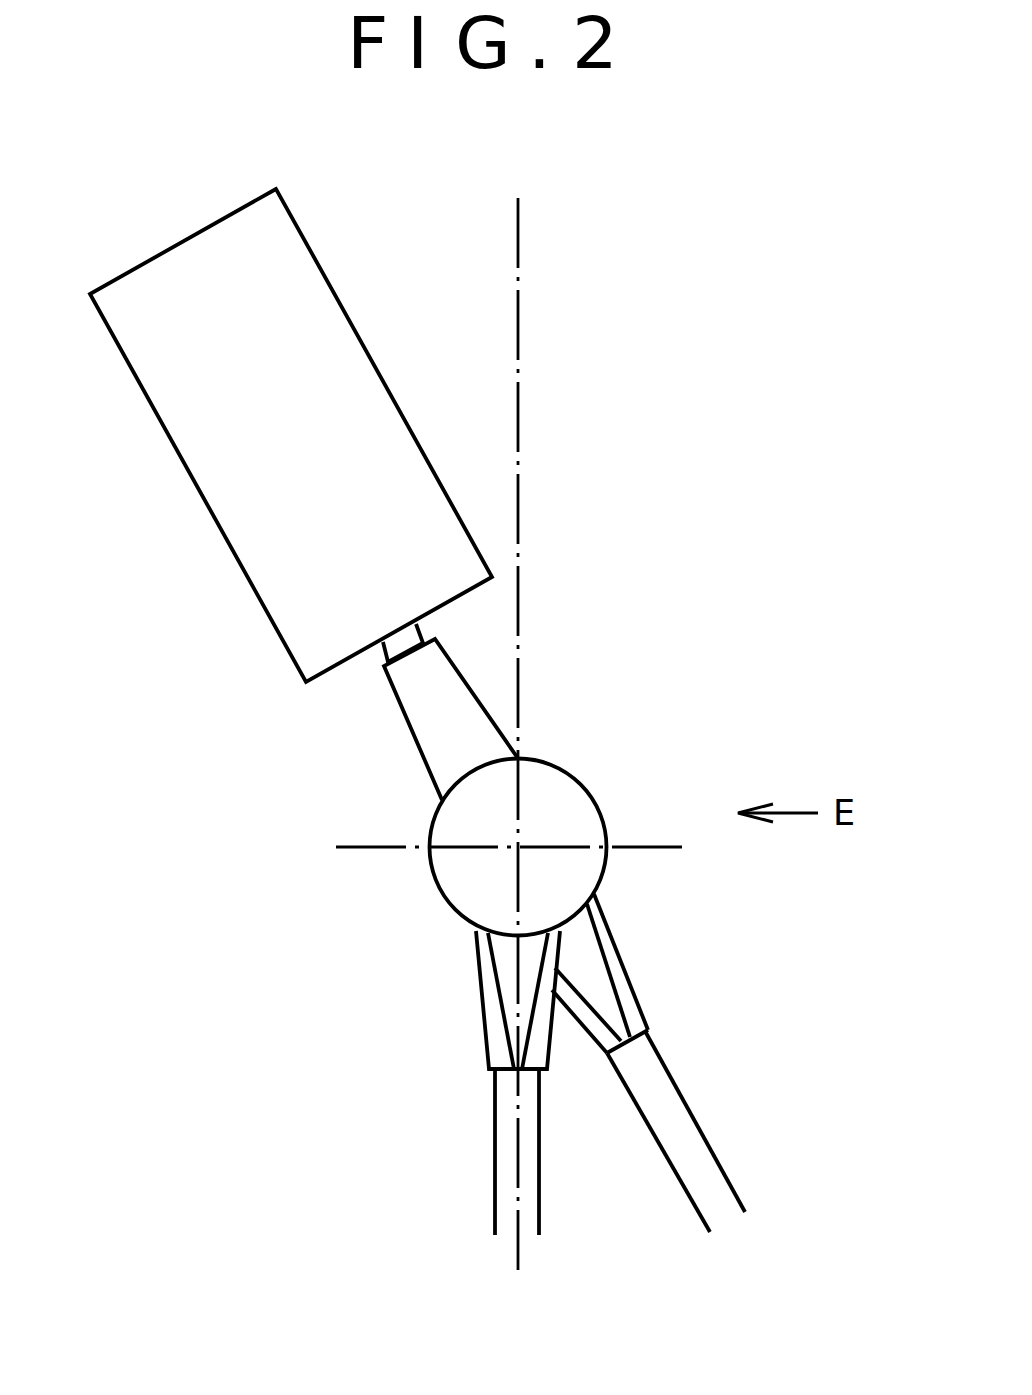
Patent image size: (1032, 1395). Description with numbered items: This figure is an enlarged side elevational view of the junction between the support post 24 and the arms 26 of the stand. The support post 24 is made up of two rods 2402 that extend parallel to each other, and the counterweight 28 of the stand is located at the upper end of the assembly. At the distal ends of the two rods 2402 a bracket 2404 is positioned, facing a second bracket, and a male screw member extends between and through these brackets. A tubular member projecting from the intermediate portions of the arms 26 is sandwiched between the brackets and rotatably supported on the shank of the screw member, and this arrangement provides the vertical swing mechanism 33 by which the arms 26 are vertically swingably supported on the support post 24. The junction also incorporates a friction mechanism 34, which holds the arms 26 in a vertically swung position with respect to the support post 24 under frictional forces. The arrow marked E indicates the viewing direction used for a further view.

The support post 24 is at (501, 969).
The rods 2402 is at (495, 1175).
The bracket 2404 is at (557, 792).
The arms 26 is at (670, 1093).
The counterweight 28 is at (288, 248).
The vertical swing mechanism 33 is at (364, 732).
The friction mechanism 34 is at (400, 822).